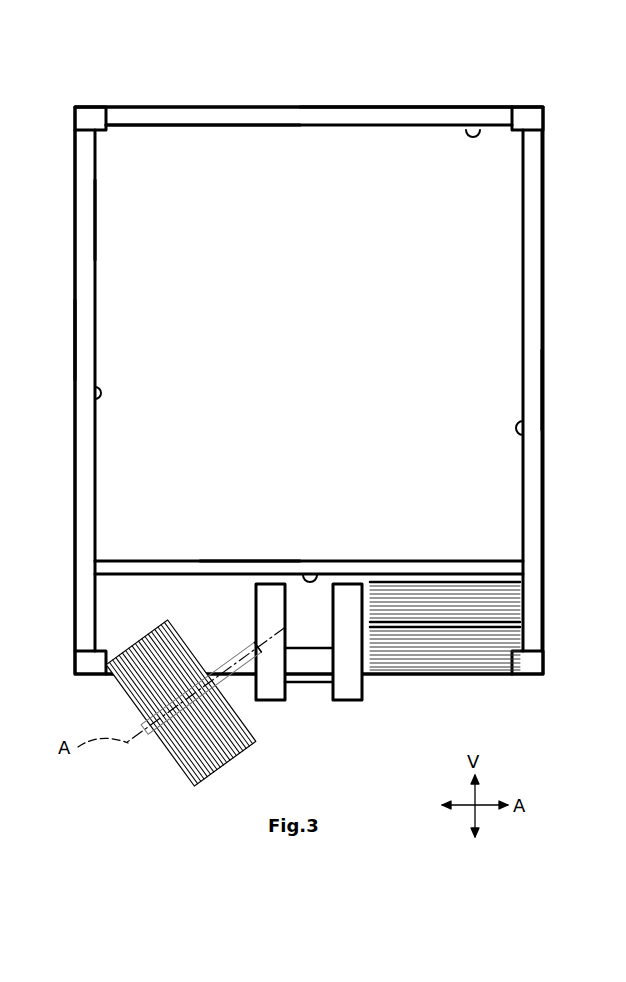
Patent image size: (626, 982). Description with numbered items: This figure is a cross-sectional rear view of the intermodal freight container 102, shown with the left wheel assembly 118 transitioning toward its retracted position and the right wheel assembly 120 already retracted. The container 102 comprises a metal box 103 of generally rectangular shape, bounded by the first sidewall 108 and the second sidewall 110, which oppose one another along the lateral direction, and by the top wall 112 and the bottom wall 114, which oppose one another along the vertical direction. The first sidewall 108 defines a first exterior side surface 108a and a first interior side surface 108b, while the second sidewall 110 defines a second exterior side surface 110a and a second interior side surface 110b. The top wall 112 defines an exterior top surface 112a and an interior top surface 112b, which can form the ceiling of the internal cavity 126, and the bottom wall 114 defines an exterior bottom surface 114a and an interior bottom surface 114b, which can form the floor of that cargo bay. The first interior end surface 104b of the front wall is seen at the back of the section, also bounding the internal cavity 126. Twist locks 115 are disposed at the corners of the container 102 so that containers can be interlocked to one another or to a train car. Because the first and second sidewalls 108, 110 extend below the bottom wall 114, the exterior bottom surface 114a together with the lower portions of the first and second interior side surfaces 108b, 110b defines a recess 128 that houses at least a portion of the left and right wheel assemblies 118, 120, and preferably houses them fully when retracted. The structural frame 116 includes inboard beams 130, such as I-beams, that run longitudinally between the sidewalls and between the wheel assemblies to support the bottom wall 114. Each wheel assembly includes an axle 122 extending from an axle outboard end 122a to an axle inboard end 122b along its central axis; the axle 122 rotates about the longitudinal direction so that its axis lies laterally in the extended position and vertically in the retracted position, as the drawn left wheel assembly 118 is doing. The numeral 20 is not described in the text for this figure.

The cutting direction arrow 20 is at (146, 758).
The intermodal freight container 102 is at (353, 102).
The metal box 103 is at (422, 118).
The first interior end surface 104b is at (145, 210).
The first sidewall 108 is at (87, 290).
The first exterior side surface 108a is at (75, 343).
The first interior side surface 108b is at (97, 397).
The second sidewall 110 is at (532, 350).
The second exterior side surface 110a is at (543, 397).
The second interior side surface 110b is at (525, 435).
The top wall 112 is at (173, 117).
The exterior top surface 112a is at (265, 105).
The interior top surface 112b is at (482, 128).
The bottom wall 114 is at (153, 565).
The exterior bottom surface 114a is at (315, 571).
The interior bottom surface 114b is at (258, 558).
The twist locks 115 is at (271, 683).
The structural frame 116 is at (273, 702).
The left wheel assembly 118 is at (172, 777).
The right wheel assembly 120 is at (468, 677).
The axle 122 is at (240, 690).
The axle outboard end 122a is at (137, 728).
The axle inboard end 122b is at (263, 635).
The internal cavity 126 is at (276, 336).
The recess 128 is at (130, 599).
The inboard beam 130 is at (362, 735).